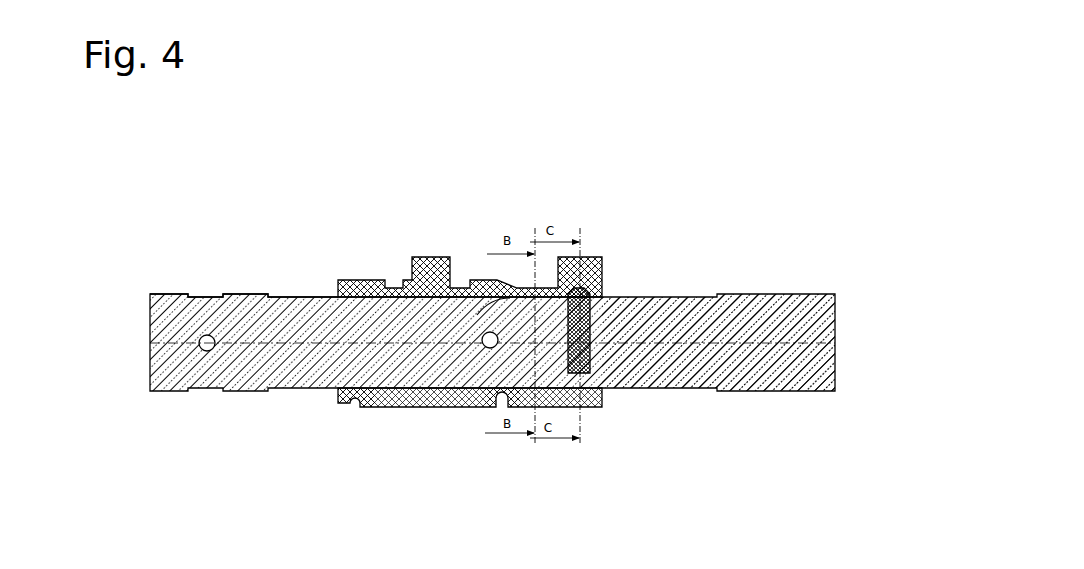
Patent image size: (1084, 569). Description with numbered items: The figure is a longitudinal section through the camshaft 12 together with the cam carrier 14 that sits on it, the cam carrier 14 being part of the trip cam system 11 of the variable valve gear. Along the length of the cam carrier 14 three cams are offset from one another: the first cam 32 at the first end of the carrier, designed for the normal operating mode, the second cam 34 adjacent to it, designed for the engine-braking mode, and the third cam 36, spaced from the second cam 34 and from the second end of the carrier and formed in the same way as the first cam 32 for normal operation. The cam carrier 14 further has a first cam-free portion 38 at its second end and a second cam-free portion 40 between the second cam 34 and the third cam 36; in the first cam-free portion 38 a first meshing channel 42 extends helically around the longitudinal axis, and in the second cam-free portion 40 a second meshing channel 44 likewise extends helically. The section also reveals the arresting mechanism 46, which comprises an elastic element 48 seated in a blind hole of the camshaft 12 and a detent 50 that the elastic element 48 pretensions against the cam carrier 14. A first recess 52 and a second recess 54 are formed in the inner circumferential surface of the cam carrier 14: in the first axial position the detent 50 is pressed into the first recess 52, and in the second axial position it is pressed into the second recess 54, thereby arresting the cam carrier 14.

The trip cam system 11 is at (295, 263).
The camshaft 12 is at (165, 318).
The cam carrier 14 is at (654, 436).
The first cam 32 is at (585, 289).
The second cam 34 is at (563, 287).
The third cam 36 is at (417, 255).
The first cam-free portion 38 is at (337, 261).
The second cam-free portion 40 is at (462, 268).
The first meshing channel 42 is at (355, 404).
The second meshing channel 44 is at (503, 398).
The arresting mechanism 46 is at (630, 342).
The elastic element 48 is at (594, 330).
The detent 50 is at (605, 296).
The first recess 52 is at (603, 407).
The second recess 54 is at (481, 337).